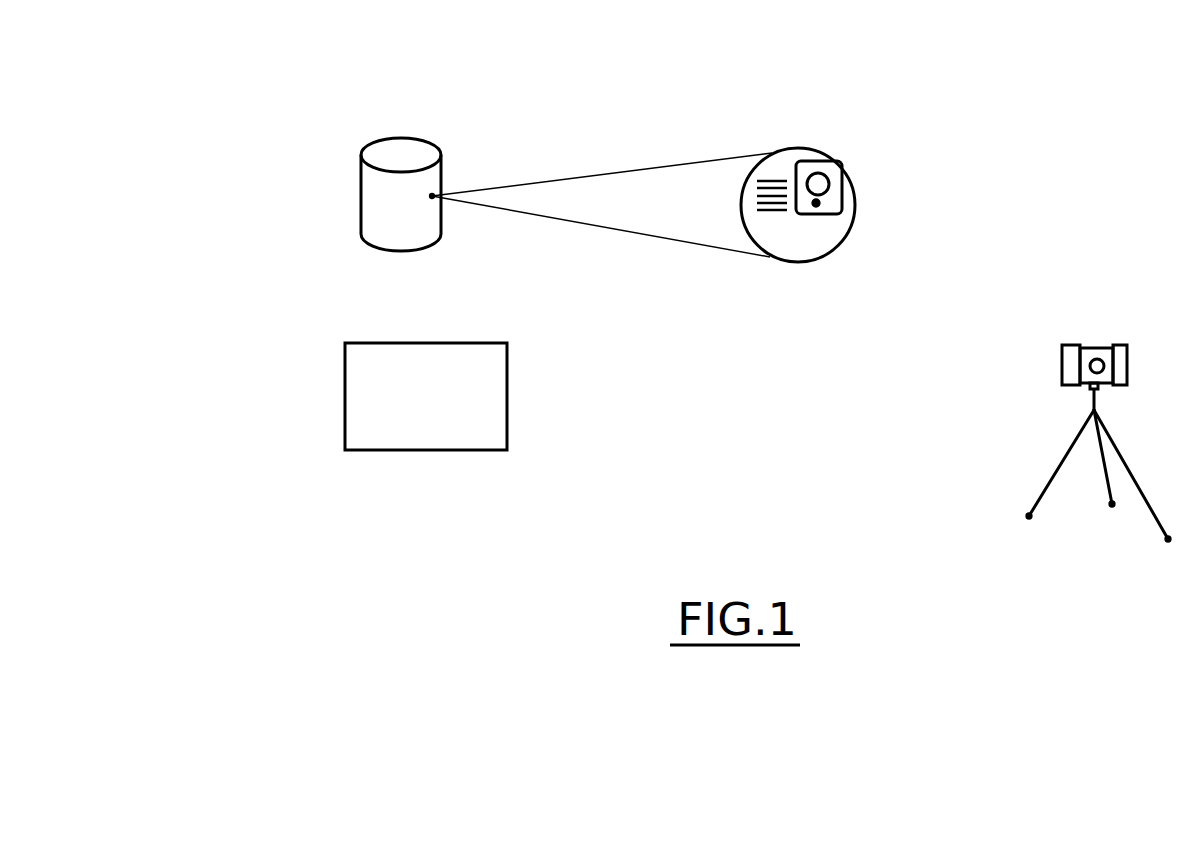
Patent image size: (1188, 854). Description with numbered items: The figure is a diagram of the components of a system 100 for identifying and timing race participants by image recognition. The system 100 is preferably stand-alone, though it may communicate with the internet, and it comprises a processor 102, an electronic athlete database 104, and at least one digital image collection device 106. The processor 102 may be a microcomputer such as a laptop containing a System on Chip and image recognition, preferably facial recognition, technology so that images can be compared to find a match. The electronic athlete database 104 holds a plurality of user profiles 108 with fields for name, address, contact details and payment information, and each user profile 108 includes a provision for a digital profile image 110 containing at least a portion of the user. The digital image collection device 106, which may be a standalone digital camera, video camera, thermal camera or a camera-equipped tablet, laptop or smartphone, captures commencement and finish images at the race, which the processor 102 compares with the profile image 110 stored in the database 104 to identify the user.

The system 100 is at (280, 118).
The processor 102 is at (454, 408).
The electronic athlete database 104 is at (435, 178).
The digital image collection device 106 is at (1070, 366).
The user profile 108 is at (775, 168).
The digital profile image 110 is at (832, 195).